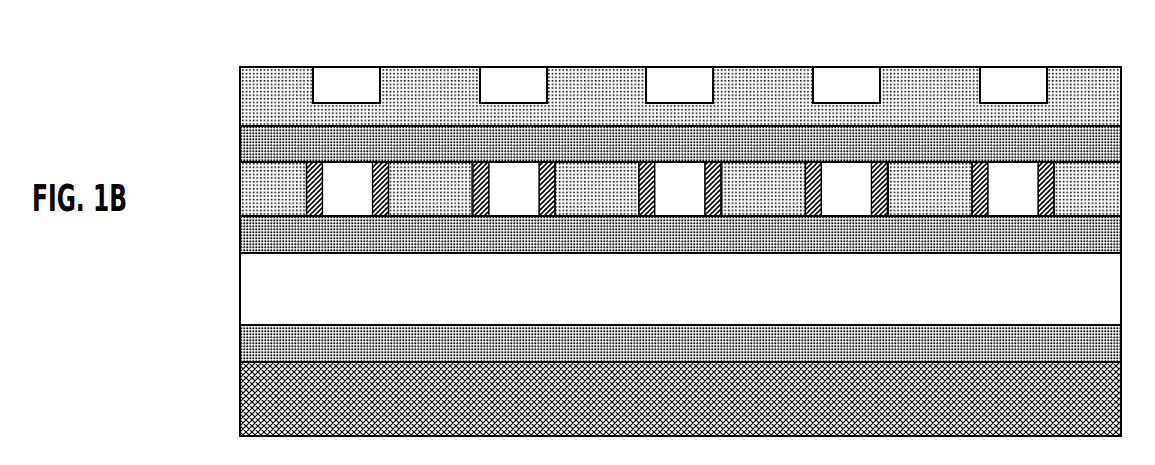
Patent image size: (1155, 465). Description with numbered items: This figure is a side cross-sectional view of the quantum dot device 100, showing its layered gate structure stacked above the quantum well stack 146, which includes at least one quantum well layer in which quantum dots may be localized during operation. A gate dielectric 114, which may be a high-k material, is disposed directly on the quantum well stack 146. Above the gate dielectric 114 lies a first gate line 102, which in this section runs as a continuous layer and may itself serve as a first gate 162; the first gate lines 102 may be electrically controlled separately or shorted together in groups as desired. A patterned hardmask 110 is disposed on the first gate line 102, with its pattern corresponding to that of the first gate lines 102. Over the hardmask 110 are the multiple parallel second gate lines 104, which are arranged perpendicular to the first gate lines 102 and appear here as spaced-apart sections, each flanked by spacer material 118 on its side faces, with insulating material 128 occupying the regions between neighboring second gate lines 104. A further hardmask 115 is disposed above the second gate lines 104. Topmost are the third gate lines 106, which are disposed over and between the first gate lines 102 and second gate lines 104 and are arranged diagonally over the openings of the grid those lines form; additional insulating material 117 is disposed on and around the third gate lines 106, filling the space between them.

The quantum dot device 100 is at (185, 63).
The first gate lines 102 is at (693, 301).
The second gate lines 104 is at (681, 189).
The third gate lines 106 is at (1027, 95).
The hardmask 110 is at (693, 245).
The gate dielectric 114 is at (693, 354).
The hardmask 115 is at (693, 153).
The insulating material 117 is at (277, 105).
The spacer material 118 is at (462, 100).
The insulating material 128 is at (680, 189).
The quantum well stack 146 is at (693, 410).
The first gate 162 is at (263, 306).